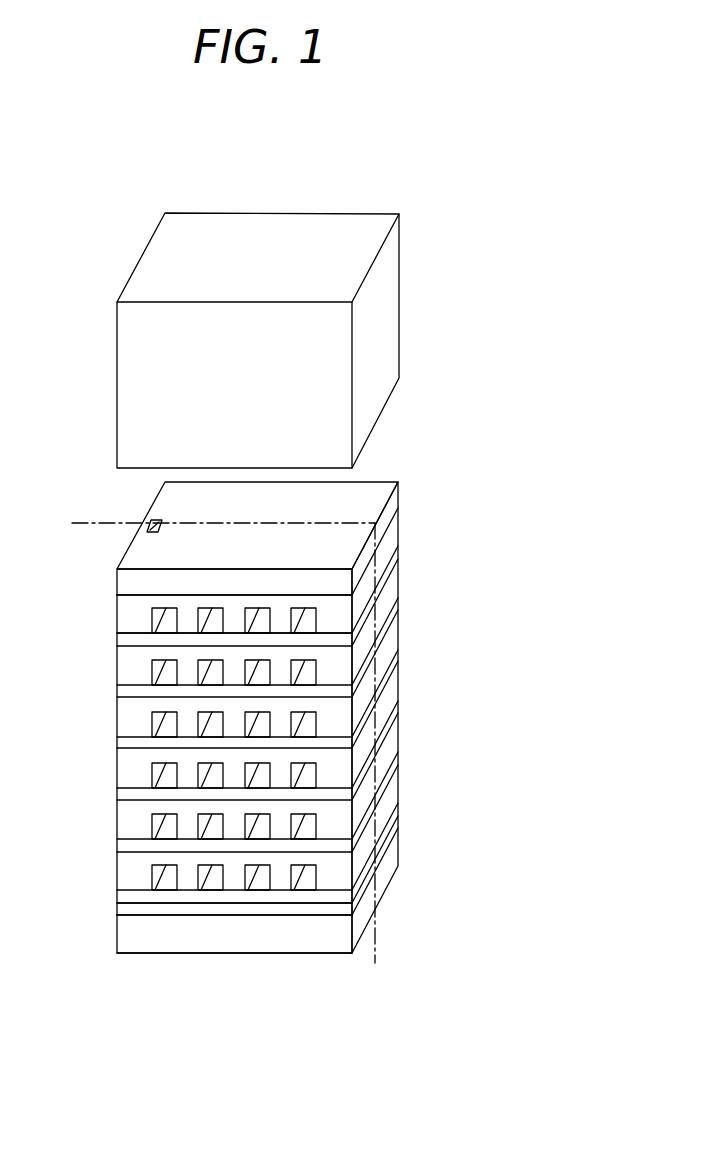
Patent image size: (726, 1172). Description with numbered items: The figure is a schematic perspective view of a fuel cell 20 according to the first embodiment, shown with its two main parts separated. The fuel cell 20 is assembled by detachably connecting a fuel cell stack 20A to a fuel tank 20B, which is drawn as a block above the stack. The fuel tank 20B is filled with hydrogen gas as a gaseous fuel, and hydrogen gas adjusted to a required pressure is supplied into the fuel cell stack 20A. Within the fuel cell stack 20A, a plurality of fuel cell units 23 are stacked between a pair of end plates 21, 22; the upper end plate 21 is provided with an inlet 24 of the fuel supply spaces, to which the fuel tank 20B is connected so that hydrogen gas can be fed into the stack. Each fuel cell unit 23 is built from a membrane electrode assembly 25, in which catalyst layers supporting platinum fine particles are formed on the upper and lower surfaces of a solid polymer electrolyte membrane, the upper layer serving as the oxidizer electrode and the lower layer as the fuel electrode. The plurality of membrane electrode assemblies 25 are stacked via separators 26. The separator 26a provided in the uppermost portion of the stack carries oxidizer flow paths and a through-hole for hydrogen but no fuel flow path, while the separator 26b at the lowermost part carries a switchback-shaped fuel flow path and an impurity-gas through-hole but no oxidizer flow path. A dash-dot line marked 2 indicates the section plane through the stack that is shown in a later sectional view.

The fuel cell 20 is at (365, 168).
The fuel cell stack 20A is at (430, 488).
The fuel tank 20B is at (420, 256).
The end plate 21 is at (117, 582).
The end plate 22 is at (117, 936).
The fuel cell unit 23 is at (400, 623).
The inlet 24 is at (163, 524).
The membrane electrode assembly 25 is at (117, 639).
The separator 26 is at (117, 665).
The separator 26a is at (117, 617).
The separator 26b is at (117, 908).
The section line II-II 2 is at (213, 752).